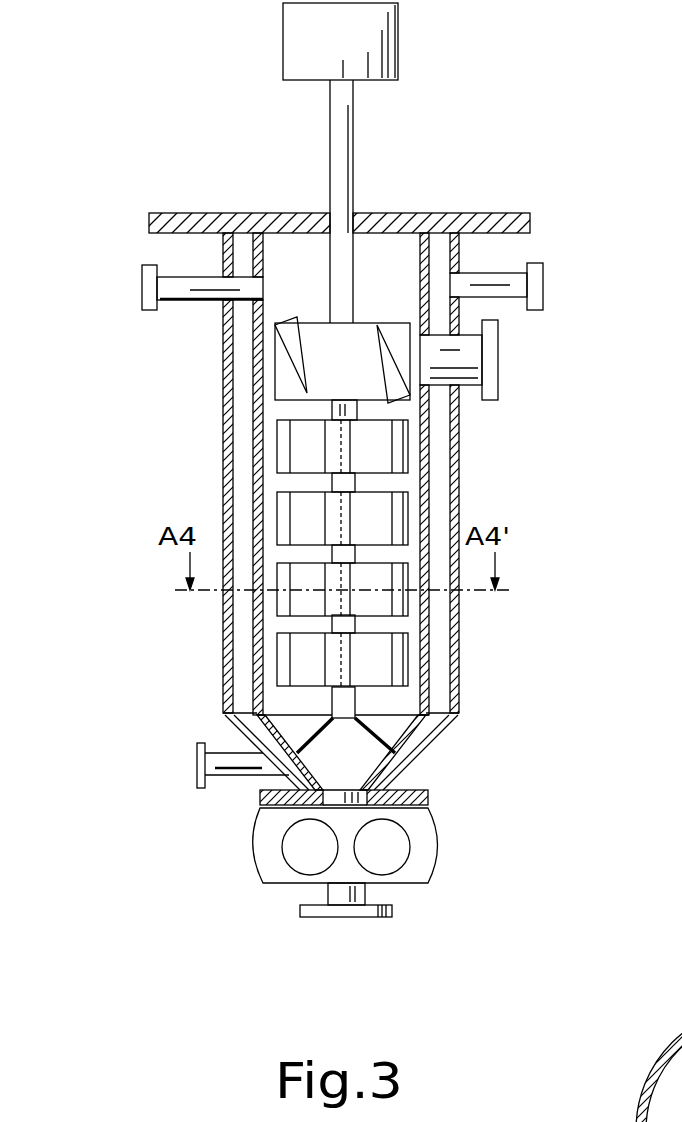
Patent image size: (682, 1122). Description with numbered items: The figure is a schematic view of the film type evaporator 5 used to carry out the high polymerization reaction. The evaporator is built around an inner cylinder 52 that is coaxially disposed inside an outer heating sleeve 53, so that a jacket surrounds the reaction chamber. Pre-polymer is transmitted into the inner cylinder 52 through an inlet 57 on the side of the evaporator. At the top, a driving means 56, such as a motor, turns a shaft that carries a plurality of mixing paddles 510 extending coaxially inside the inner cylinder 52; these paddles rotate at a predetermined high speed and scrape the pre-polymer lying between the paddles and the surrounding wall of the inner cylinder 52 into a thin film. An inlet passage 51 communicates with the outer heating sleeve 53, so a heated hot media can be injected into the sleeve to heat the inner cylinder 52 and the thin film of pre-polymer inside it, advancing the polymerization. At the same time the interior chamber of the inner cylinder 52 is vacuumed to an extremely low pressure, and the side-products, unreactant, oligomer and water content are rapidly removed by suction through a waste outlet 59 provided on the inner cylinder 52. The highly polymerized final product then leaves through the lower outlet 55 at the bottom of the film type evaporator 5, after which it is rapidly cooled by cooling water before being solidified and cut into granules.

The film type evaporator 5 is at (208, 485).
The inlet passage 51 is at (197, 762).
The inner cylinder 52 is at (430, 440).
The outer heating sleeve 53 is at (442, 497).
The lower outlet 55 is at (392, 912).
The driving means 56 is at (398, 57).
The inlet 57 is at (498, 375).
The waste outlet 59 is at (143, 297).
The mixing paddles 510 is at (403, 603).